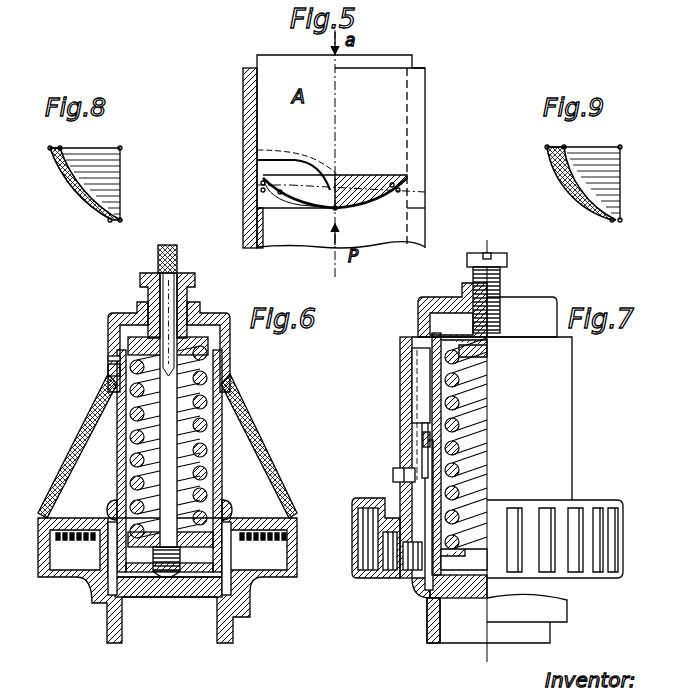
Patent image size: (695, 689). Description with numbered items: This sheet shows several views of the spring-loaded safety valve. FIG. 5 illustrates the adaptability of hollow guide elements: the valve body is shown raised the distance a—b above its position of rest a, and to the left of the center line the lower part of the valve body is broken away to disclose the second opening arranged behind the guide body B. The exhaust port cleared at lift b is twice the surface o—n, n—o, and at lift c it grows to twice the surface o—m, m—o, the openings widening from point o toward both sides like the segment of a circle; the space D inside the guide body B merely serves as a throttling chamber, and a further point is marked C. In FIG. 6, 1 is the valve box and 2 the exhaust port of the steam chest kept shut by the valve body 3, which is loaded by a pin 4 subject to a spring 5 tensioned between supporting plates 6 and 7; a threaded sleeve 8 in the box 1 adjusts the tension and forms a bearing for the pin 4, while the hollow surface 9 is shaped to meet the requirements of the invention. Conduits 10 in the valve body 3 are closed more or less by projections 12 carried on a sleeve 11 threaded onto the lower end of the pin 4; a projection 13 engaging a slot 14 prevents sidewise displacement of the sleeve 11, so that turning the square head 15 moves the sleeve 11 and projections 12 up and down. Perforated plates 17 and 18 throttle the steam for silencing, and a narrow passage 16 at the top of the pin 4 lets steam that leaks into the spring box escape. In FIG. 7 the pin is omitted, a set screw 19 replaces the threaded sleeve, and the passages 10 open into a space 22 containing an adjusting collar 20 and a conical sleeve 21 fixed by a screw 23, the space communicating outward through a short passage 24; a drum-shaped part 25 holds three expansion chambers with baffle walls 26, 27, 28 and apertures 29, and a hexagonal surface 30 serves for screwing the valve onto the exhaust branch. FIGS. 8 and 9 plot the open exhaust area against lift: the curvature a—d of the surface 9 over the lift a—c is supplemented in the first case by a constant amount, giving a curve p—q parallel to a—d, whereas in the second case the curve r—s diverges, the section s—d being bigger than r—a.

In FIG. 6, the valve box 1 is at (84, 590).
In FIG. 7, the valve box 1 is at (404, 389).
In FIG. 6, the exhaust port of the steam chest 2 is at (135, 628).
In FIG. 7, the exhaust port of the steam chest 2 is at (445, 633).
In FIG. 6, the valve body 3 is at (191, 600).
In FIG. 7, the valve body 3 is at (471, 600).
In FIG. 6, the pin 4 is at (180, 447).
In FIG. 6, the spring 5 is at (226, 394).
In FIG. 7, the spring 5 is at (458, 404).
In FIG. 6, the supporting plate 6 is at (208, 530).
In FIG. 7, the supporting plate 6 is at (470, 556).
In FIG. 6, the supporting plate 7 is at (208, 345).
In FIG. 7, the supporting plate 7 is at (482, 355).
In FIG. 6, the threaded sleeve 8 is at (188, 293).
In FIG. 6, the hollow surface 9 is at (258, 587).
In FIG. 7, the hollow surface 9 is at (430, 599).
In FIG. 6, the conduits or passages 10 is at (112, 559).
In FIG. 7, the conduits or passages 10 is at (428, 586).
In FIG. 6, the sleeve 11 is at (120, 453).
In FIG. 7, the sleeve 11 is at (436, 406).
In FIG. 6, the projections 12 is at (112, 503).
In FIG. 6, the projection 13 is at (122, 361).
In FIG. 6, the slot 14 is at (118, 378).
In FIG. 6, the square headed upper end 15 is at (160, 260).
In FIG. 6, the narrow passage 16 is at (162, 296).
In FIG. 6, the perforated plate 17 is at (70, 536).
In FIG. 6, the perforated plate 18 is at (72, 462).
In FIG. 7, the set screw 19 is at (505, 274).
In FIG. 7, the adjusting collar 20 is at (420, 436).
In FIG. 7, the conical sleeve 21 is at (422, 452).
In FIG. 7, the space 22 is at (432, 359).
In FIG. 7, the screw 23 is at (391, 469).
In FIG. 7, the short passage 24 is at (420, 338).
In FIG. 7, the drum-shaped part 25 is at (593, 500).
In FIG. 7, the baffle wall 26 is at (368, 525).
In FIG. 7, the baffle wall 27 is at (390, 553).
In FIG. 7, the baffle wall 28 is at (416, 560).
In FIG. 7, the apertures 29 is at (558, 562).
In FIG. 7, the hexagonal surface 30 is at (555, 613).
In FIG. 5, the position of rest a is at (272, 203).
In FIG. 8, the position of rest a is at (121, 220).
In FIG. 9, the position of rest a is at (621, 220).
In FIG. 5, the lift point b is at (262, 190).
In FIG. 5, the lift point c is at (262, 182).
In FIG. 8, the lift point c is at (121, 148).
In FIG. 9, the lift point c is at (621, 147).
In FIG. 8, the curve end point d is at (61, 148).
In FIG. 9, the curve end point d is at (565, 147).
In FIG. 5, the opening boundary point m is at (280, 188).
In FIG. 5, the opening boundary point n is at (300, 196).
In FIG. 5, the opening origin point o is at (362, 190).
In FIG. 8, the curve point p is at (109, 220).
In FIG. 8, the curve point q is at (50, 148).
In FIG. 9, the curve point r is at (612, 220).
In FIG. 9, the curve point s is at (547, 147).
In FIG. 5, the guide body B is at (243, 112).
In FIG. 5, the bottom C is at (300, 236).
In FIG. 5, the space within the guide body D is at (270, 200).